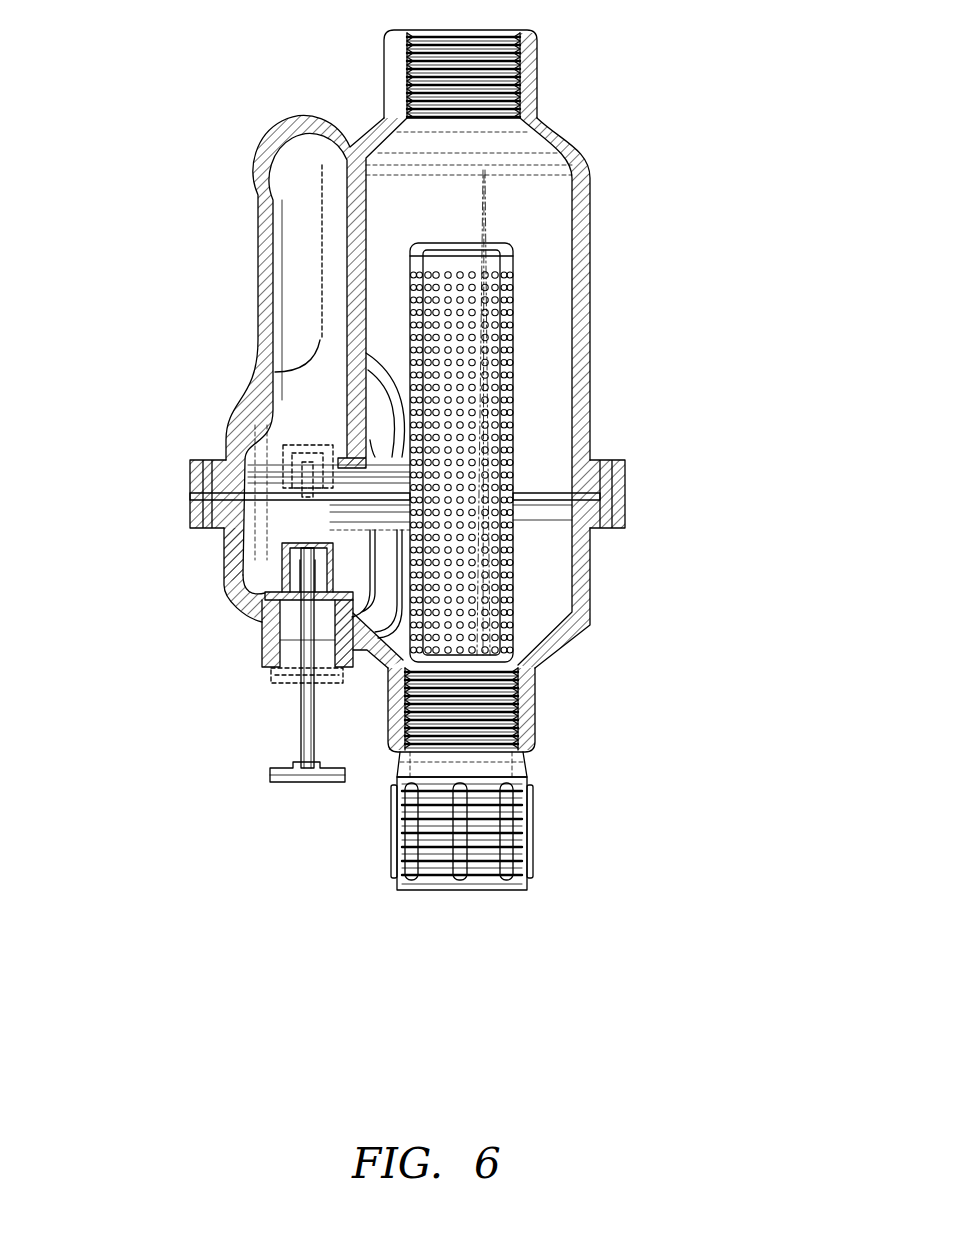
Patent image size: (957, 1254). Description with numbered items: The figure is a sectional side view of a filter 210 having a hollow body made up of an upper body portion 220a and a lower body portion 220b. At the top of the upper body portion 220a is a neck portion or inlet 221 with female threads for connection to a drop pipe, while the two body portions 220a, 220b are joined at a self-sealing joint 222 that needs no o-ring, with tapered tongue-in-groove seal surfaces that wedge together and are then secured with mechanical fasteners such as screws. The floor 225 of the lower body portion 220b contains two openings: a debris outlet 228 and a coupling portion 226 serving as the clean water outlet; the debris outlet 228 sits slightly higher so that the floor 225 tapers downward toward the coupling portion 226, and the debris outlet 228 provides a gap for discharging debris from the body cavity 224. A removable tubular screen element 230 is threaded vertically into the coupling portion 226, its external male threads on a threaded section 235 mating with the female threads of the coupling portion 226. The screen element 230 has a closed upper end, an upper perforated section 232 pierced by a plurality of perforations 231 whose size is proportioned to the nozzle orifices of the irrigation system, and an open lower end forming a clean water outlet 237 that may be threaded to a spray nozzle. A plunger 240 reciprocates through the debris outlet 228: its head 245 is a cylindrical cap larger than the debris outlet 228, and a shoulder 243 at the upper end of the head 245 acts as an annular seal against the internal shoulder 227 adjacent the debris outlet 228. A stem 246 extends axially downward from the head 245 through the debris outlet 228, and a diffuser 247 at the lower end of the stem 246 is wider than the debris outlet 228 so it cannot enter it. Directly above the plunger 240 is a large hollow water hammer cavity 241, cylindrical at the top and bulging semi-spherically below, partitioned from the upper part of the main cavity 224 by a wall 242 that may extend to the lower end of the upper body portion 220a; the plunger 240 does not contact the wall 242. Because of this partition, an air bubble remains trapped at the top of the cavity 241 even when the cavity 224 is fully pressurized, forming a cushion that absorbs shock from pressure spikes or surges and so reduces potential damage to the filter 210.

The filter 210 is at (704, 71).
The upper body portion 220a is at (606, 260).
The lower body portion 220b is at (612, 556).
The neck portion or inlet 221 is at (537, 80).
The self-sealing joint 222 is at (604, 505).
The body cavity 224 is at (548, 225).
The floor 225 is at (578, 632).
The coupling portion 226 is at (540, 700).
The internal shoulder 227 is at (252, 614).
The debris outlet 228 is at (258, 680).
The screen element 230 is at (412, 230).
The perforations 231 is at (487, 362).
The upper perforated section 232 is at (412, 290).
The threaded section 235 is at (530, 754).
The clean water outlet 237 is at (465, 890).
The plunger 240 is at (290, 800).
The water hammer cavity 241 is at (300, 315).
The wall 242 is at (350, 421).
The shoulder 243 is at (258, 598).
The head 245 is at (280, 590).
The stem 246 is at (300, 720).
The diffuser 247 is at (330, 784).